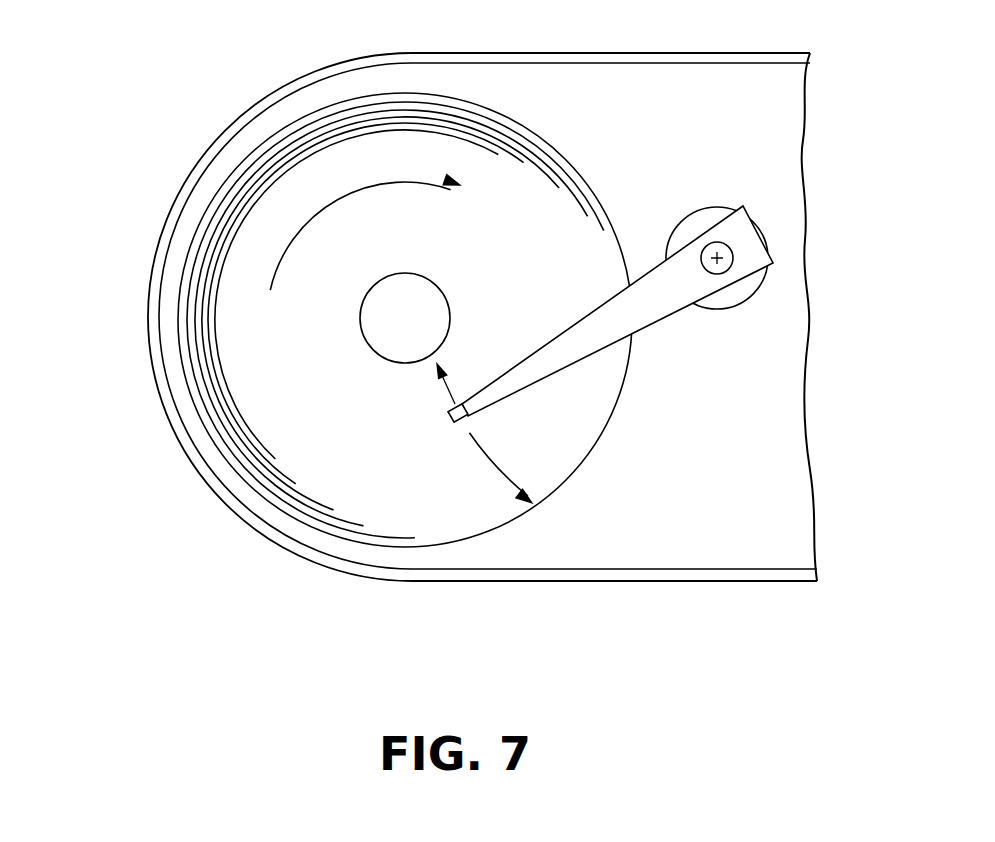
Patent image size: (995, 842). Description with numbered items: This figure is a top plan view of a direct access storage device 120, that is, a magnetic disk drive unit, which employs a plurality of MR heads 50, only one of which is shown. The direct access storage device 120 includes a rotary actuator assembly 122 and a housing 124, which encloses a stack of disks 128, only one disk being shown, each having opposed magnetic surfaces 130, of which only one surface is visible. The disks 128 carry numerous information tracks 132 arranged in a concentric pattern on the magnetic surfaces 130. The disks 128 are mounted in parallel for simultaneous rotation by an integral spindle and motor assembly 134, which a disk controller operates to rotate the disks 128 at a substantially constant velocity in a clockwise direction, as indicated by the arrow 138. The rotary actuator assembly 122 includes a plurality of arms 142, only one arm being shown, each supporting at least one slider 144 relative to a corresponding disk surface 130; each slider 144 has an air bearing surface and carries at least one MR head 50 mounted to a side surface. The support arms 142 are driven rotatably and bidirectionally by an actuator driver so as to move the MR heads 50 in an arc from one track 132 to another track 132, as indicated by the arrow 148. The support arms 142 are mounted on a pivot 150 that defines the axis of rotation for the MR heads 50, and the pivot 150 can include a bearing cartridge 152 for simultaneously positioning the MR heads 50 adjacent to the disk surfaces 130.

The direct access storage device 120 is at (134, 235).
The rotary actuator assembly 122 is at (692, 195).
The housing 124 is at (197, 465).
The disk 128 is at (198, 410).
The magnetic surface 130 is at (230, 375).
The information track 132 is at (292, 166).
The integral spindle and motor assembly 134 is at (440, 287).
The arrow 138 is at (318, 206).
The arm 142 is at (667, 313).
The slider 144 is at (460, 408).
The arrow 148 is at (500, 478).
The pivot 150 is at (718, 256).
The bearing cartridge 152 is at (744, 303).
The MR head 50 is at (450, 421).